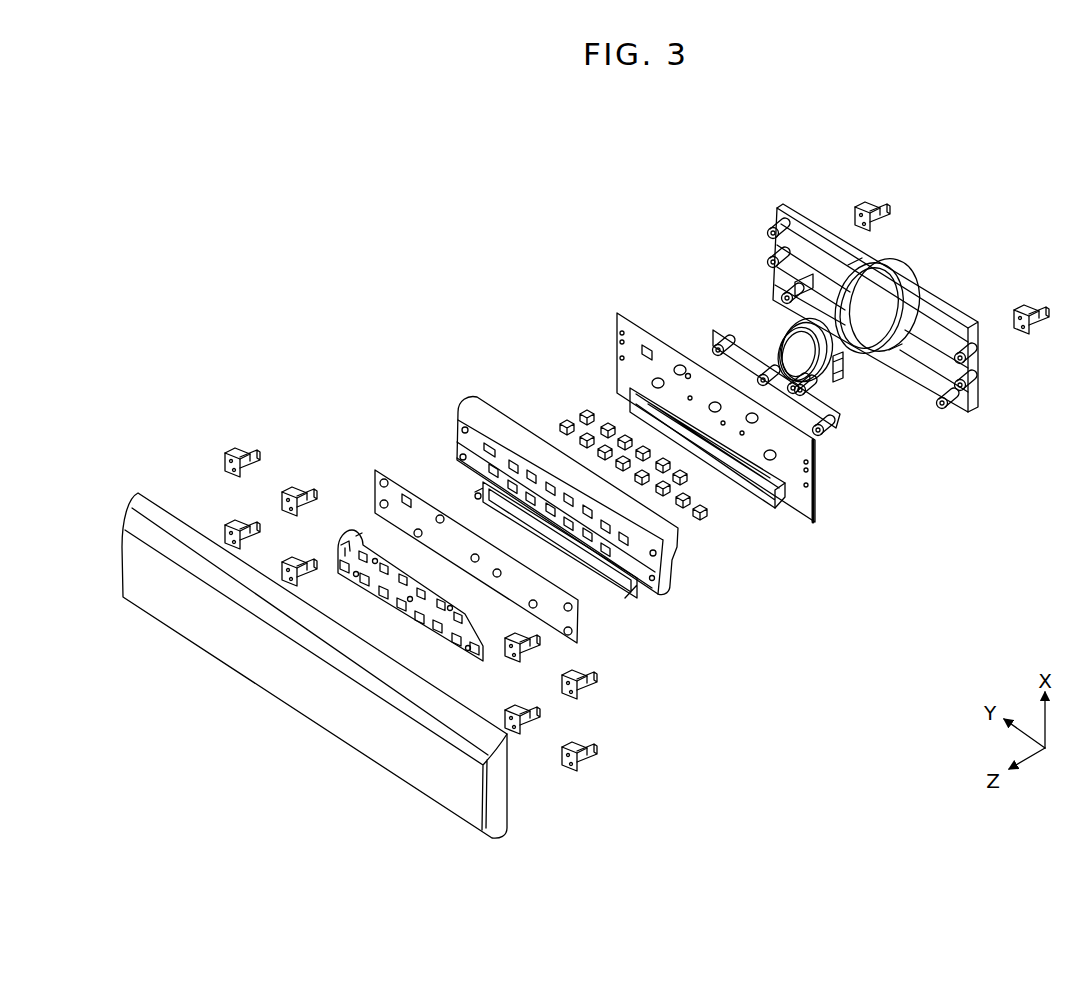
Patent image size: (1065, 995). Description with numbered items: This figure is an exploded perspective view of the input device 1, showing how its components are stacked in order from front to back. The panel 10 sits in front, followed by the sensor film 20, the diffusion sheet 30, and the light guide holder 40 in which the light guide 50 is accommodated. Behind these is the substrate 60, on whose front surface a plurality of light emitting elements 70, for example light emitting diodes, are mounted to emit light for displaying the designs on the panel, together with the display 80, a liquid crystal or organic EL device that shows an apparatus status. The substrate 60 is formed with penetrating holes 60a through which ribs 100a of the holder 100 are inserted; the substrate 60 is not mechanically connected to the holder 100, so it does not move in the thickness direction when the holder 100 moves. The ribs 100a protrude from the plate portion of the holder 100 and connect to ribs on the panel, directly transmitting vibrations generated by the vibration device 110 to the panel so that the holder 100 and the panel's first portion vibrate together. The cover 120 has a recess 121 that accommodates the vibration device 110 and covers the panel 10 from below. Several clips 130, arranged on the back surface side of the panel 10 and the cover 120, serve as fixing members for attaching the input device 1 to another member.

The input device 1 is at (990, 222).
The panel 10 is at (287, 710).
The sensor film 20 is at (355, 533).
The diffusion sheet 30 is at (578, 623).
The light guide holder 40 is at (460, 427).
The light guide 50 is at (705, 525).
The substrate 60 is at (617, 365).
The penetrating holes 60a is at (668, 356).
The light emitting element 70 is at (688, 372).
The display 80 is at (750, 500).
The holder 100 is at (832, 427).
The ribs 100a is at (703, 352).
The vibration device 110 is at (847, 372).
The cover 120 is at (798, 212).
The recess 121 is at (882, 302).
The clip 130 is at (572, 773).